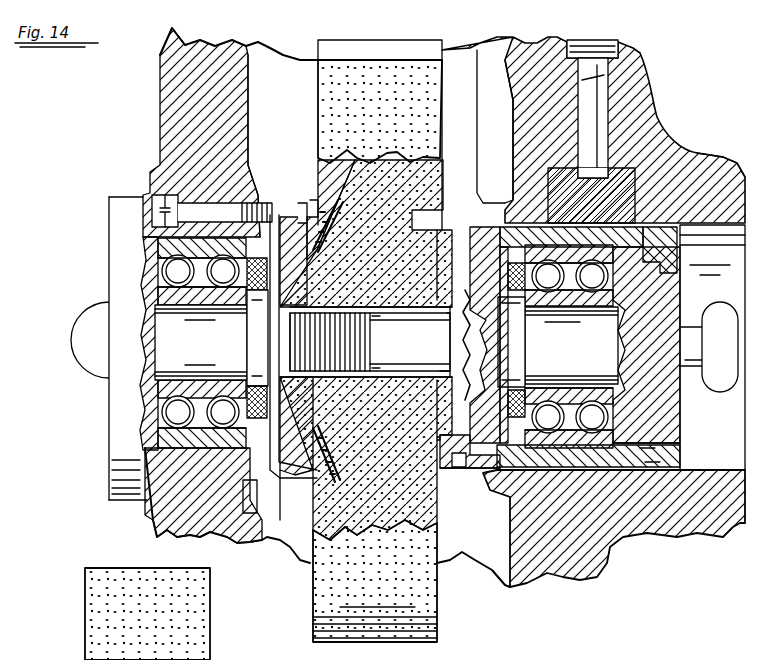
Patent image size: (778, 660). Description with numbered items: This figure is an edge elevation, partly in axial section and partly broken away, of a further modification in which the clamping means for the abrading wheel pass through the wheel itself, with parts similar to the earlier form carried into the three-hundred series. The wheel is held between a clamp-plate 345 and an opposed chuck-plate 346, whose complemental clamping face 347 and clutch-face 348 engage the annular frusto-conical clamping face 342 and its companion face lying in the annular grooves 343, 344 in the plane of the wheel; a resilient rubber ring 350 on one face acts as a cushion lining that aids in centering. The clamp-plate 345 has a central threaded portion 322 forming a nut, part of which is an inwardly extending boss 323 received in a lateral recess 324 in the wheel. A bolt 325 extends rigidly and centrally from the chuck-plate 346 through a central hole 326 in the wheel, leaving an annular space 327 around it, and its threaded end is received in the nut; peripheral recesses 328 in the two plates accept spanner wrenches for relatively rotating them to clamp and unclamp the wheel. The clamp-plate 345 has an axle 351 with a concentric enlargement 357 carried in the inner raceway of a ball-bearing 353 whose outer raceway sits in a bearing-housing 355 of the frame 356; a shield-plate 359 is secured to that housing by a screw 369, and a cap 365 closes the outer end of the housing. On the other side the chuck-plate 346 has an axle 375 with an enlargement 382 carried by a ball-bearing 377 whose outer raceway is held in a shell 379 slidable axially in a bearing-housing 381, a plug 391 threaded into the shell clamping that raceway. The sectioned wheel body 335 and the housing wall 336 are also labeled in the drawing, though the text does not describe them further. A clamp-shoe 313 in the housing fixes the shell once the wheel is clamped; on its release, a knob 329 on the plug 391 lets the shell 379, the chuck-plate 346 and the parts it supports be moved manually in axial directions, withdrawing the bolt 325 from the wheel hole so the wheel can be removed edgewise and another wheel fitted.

The clamp-shoe 313 is at (676, 151).
The threaded portion 322 is at (290, 328).
The boss 323 is at (373, 316).
The lateral recess 324 is at (378, 372).
The bolt 325 is at (417, 330).
The central hole 326 is at (455, 387).
The annular space 327 is at (432, 313).
The recesses 328 is at (303, 205).
The knob 329 is at (717, 388).
The column 335 is at (440, 614).
The housing wall 336 is at (653, 123).
The clamping face 342 is at (452, 203).
The annular groove 343 is at (307, 535).
The annular groove 344 is at (433, 203).
The clamp-plate 345 is at (307, 472).
The chuck-plate 346 is at (446, 470).
The clamping face 347 is at (316, 197).
The clutch-face 348 is at (447, 470).
The resilient rubber ring 350 is at (350, 163).
The axle 351 is at (208, 353).
The ball-bearing 353 is at (172, 408).
The bearing-housing 355 is at (157, 468).
The frame 356 is at (152, 522).
The enlargement 357 is at (253, 357).
The shield-plate 359 is at (257, 500).
The cap 365 is at (114, 249).
The screw 369 is at (162, 204).
The axle 375 is at (580, 330).
The ball-bearing 377 is at (550, 405).
The shell 379 is at (665, 458).
The bearing-housing 381 is at (647, 500).
The enlargement 382 is at (520, 352).
The plug 391 is at (677, 430).